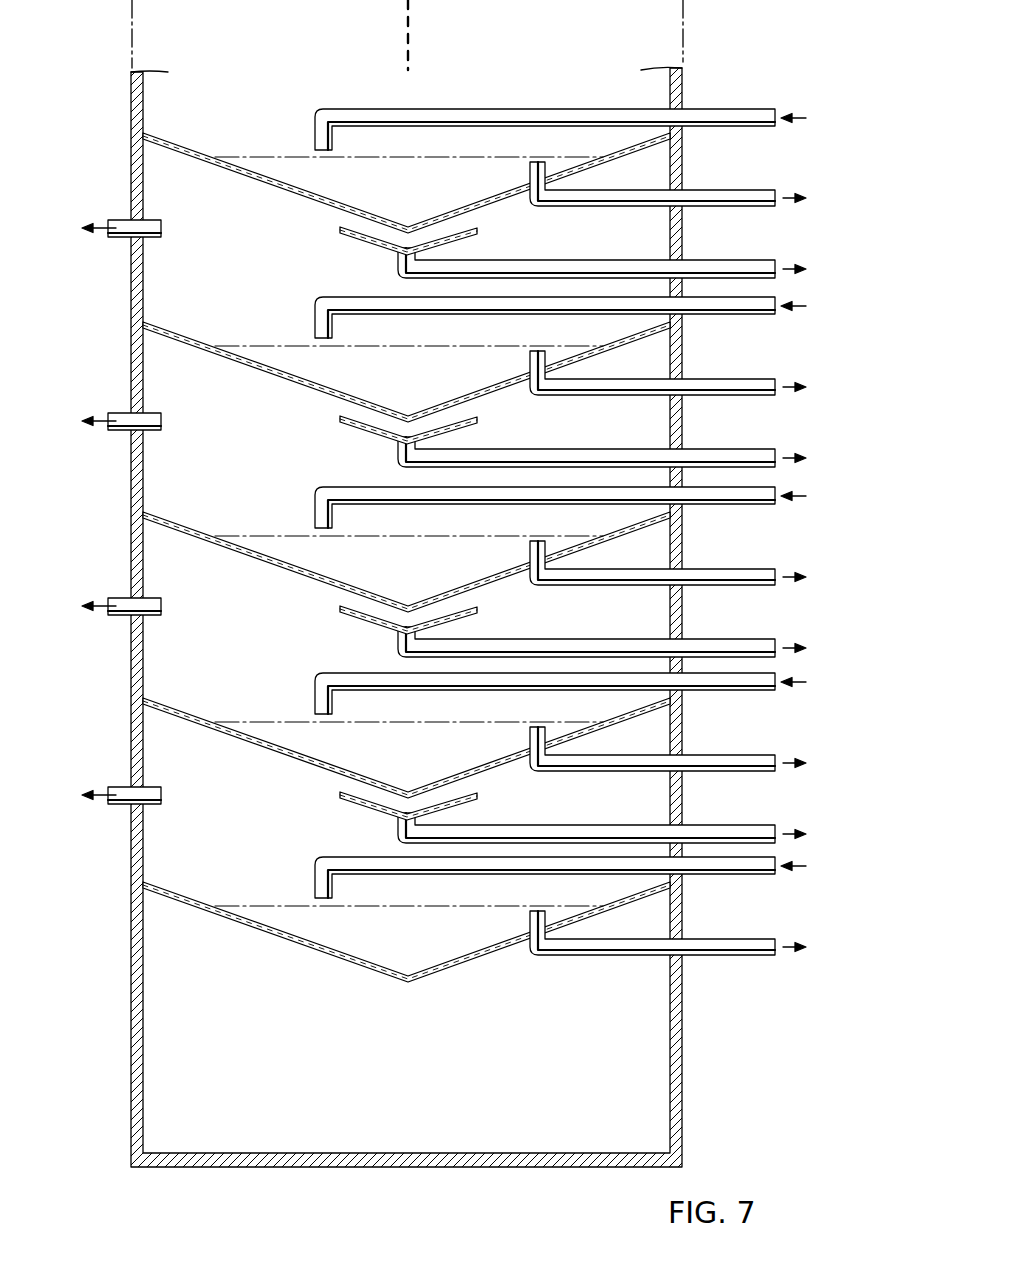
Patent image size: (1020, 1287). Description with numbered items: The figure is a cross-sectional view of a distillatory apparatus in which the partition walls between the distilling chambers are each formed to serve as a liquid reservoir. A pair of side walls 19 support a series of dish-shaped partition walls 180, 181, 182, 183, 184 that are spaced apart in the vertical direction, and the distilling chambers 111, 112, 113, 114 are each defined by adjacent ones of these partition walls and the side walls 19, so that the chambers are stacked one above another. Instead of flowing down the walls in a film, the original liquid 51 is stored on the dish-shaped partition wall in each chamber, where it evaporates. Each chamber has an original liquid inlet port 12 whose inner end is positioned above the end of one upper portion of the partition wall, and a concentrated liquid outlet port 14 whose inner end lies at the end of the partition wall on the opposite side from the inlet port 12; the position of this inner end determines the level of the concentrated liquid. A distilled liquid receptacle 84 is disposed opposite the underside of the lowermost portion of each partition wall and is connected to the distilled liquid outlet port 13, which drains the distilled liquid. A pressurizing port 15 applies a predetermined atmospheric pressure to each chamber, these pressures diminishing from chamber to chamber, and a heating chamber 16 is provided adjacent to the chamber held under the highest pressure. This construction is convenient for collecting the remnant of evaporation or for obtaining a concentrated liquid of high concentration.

The side wall 19 is at (133, 100).
The original liquid inlet port 12 is at (722, 108).
The concentrated liquid outlet port 14 is at (722, 190).
The distilled liquid outlet port 13 is at (720, 260).
The pressurizing port 15 is at (122, 219).
The heating chamber 16 is at (172, 1017).
The original liquid 51 is at (286, 905).
The distilled liquid receptacle 84 is at (357, 238).
The distilling chamber 111 is at (172, 848).
The distilling chamber 112 is at (183, 660).
The distilling chamber 113 is at (185, 462).
The distilling chamber 114 is at (178, 264).
The partition wall 180 is at (260, 930).
The partition wall 181 is at (262, 743).
The partition wall 182 is at (262, 557).
The partition wall 183 is at (262, 367).
The partition wall 184 is at (262, 178).